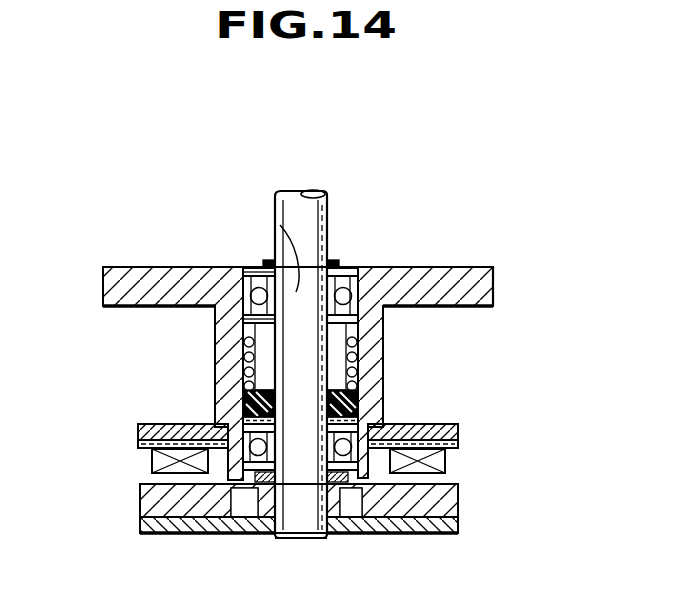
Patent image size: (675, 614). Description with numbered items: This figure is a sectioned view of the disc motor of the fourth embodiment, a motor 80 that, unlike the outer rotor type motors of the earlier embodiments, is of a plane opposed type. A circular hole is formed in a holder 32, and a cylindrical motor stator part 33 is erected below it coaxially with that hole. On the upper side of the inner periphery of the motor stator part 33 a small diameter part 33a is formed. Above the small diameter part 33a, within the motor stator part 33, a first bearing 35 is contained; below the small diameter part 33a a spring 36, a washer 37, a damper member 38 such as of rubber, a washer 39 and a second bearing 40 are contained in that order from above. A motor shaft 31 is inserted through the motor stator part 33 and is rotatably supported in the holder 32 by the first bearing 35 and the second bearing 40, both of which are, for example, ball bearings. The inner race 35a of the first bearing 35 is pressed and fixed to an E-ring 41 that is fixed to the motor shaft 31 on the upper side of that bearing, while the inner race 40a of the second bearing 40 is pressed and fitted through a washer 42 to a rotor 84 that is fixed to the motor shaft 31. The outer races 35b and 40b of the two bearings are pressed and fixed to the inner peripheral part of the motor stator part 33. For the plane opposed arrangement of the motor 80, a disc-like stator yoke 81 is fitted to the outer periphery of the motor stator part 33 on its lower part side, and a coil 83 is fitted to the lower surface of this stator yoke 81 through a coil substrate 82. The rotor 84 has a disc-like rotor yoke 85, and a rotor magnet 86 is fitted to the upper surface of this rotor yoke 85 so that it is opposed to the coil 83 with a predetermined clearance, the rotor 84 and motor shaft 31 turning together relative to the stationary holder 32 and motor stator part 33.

The motor shaft 31 is at (302, 191).
The holder 32 is at (468, 267).
The motor stator part 33 is at (383, 335).
The small diameter part 33a is at (302, 328).
The first bearing 35 is at (352, 265).
The inner race 35a is at (273, 263).
The outer race 35b is at (245, 293).
The spring 36 is at (237, 345).
The washer 37 is at (357, 379).
The damper member 38 is at (243, 402).
The washer 39 is at (240, 417).
The second bearing 40 is at (352, 478).
The inner race 40a is at (245, 490).
The outer race 40b is at (233, 490).
The E-ring 41 is at (265, 262).
The washer 42 is at (310, 484).
The motor 80 is at (221, 191).
The stator yoke 81 is at (460, 430).
The coil substrate 82 is at (460, 447).
The coil 83 is at (150, 455).
The rotor 84 is at (437, 537).
The rotor yoke 85 is at (460, 530).
The rotor magnet 86 is at (460, 504).